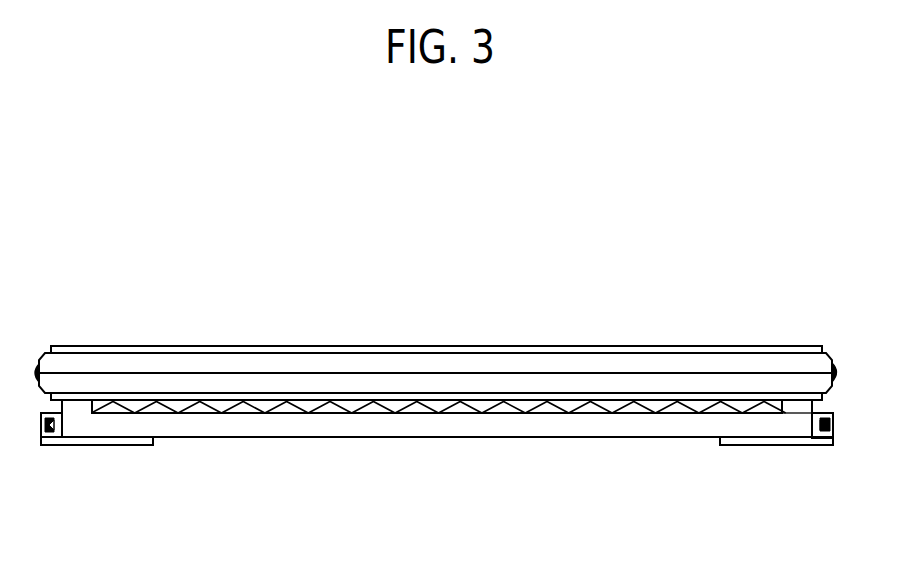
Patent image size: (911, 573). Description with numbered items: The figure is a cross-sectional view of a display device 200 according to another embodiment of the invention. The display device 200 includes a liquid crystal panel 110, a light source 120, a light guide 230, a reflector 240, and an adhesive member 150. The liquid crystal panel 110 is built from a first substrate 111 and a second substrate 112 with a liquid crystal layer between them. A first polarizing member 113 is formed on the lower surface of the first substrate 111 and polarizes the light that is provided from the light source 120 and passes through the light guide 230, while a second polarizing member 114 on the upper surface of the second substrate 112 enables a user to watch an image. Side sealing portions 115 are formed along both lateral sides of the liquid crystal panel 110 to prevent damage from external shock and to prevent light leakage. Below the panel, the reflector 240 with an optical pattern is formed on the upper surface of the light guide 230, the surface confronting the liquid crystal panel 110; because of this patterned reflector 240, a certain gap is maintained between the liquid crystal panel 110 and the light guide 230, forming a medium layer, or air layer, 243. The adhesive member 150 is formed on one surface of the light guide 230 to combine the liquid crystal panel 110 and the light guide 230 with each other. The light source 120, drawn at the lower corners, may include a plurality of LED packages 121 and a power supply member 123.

The display device 200 is at (141, 218).
The liquid crystal panel 110 is at (573, 258).
The first substrate 111 is at (398, 378).
The second substrate 112 is at (452, 365).
The first polarizing member 113 is at (502, 397).
The second polarizing member 114 is at (562, 350).
The side sealing portion 115 is at (843, 362).
The adhesive member 150 is at (773, 402).
The light guide 230 is at (317, 427).
The reflector 240 is at (420, 410).
The medium layer (air layer) 243 is at (368, 410).
The light source 120 is at (837, 518).
The LED package 121 is at (828, 445).
The power supply member 123 is at (758, 445).